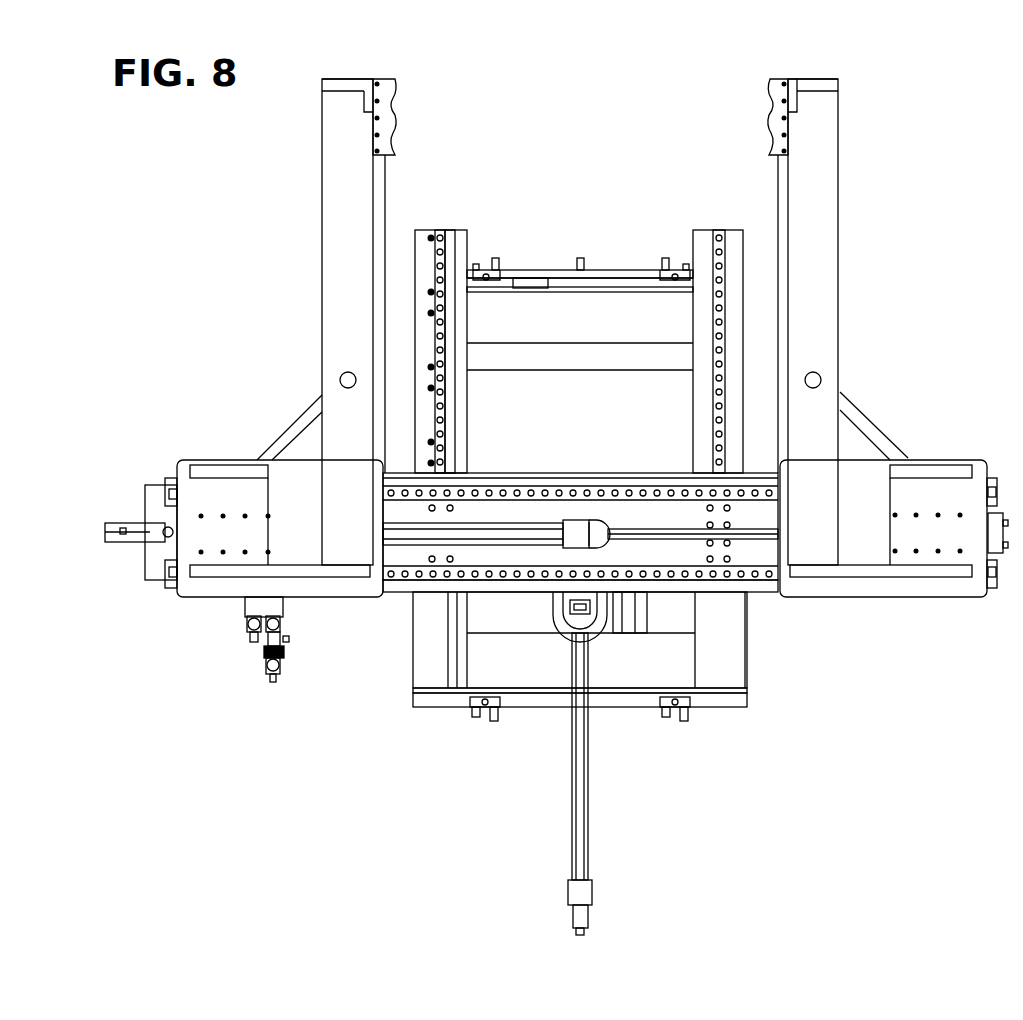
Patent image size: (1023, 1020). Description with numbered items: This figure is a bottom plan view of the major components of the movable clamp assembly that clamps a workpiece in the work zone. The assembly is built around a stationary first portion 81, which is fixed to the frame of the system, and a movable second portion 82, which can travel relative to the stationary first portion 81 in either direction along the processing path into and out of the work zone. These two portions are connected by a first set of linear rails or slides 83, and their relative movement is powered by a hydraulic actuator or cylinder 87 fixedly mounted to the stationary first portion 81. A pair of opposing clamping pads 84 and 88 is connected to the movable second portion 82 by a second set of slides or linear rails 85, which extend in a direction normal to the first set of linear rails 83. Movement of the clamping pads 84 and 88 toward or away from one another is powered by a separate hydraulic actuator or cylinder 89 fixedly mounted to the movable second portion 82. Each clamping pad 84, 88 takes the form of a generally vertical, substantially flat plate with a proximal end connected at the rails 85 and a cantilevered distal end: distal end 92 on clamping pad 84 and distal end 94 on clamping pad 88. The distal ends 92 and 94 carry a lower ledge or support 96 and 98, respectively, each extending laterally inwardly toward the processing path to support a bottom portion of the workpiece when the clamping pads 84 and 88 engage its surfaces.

The stationary first portion 81 is at (535, 252).
The movable second portion 82 is at (553, 476).
The first set of linear rails or slides 83 is at (715, 405).
The clamping pad 84 is at (818, 235).
The second set of slides or linear rails 85 is at (485, 497).
The hydraulic actuator or cylinder 87 is at (580, 858).
The clamping pad 88 is at (338, 296).
The hydraulic actuator or cylinder 89 is at (136, 532).
The distal end 92 is at (815, 78).
The distal end 94 is at (347, 78).
The lower ledge or support 96 is at (770, 82).
The lower ledge or support 98 is at (395, 97).